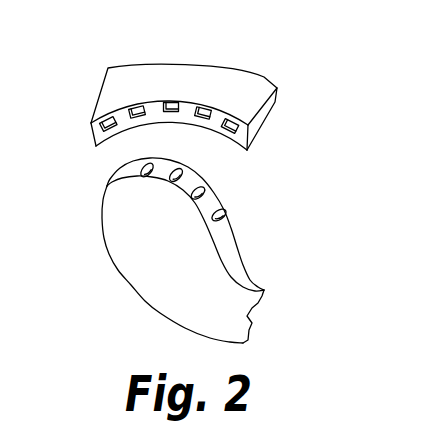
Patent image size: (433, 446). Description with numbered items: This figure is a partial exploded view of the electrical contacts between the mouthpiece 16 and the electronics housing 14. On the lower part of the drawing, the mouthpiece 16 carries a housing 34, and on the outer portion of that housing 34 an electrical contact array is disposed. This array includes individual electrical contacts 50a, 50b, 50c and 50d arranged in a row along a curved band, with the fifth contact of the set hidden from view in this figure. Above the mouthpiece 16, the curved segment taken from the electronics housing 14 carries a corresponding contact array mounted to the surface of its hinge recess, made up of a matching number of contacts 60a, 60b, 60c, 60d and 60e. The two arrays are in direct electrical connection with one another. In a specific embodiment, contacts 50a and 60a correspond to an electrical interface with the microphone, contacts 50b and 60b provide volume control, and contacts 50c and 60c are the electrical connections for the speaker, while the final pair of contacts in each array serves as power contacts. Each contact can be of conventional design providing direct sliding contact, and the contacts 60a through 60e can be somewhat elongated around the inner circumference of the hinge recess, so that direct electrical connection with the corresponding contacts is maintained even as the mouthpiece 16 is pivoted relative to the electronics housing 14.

The electronics housing 14 is at (137, 75).
The mouthpiece 16 is at (157, 247).
The housing 34 is at (252, 268).
The electrical contact 50a is at (227, 212).
The electrical contact 50b is at (207, 184).
The electrical contact 50c is at (186, 162).
The electrical contact 50d is at (107, 184).
The electrical contact 60a is at (234, 119).
The electrical contact 60b is at (204, 106).
The electrical contact 60c is at (167, 100).
The electrical contact 60d is at (137, 105).
The electrical contact 60e is at (103, 114).